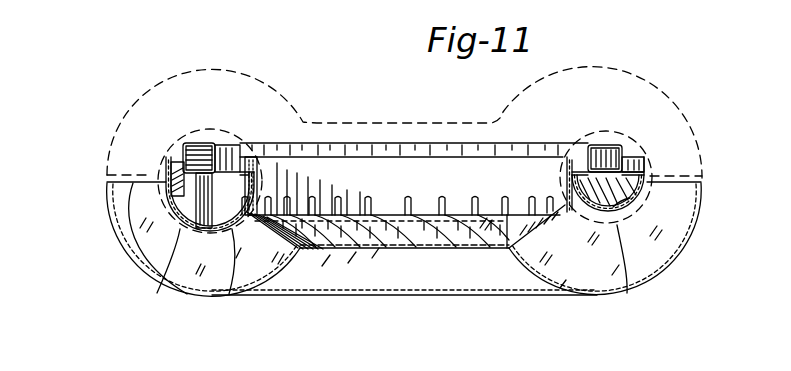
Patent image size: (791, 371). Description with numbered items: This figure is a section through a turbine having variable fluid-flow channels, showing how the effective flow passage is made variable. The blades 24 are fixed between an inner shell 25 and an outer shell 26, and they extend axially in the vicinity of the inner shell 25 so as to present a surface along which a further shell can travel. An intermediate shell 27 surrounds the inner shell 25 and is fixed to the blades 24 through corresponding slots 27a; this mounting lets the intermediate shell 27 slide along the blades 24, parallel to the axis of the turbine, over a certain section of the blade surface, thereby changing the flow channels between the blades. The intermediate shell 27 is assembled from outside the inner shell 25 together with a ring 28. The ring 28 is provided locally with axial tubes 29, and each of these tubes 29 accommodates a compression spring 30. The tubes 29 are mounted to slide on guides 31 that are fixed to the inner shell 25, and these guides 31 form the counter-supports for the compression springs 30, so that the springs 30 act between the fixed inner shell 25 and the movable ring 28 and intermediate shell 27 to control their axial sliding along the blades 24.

The blades 24 is at (200, 258).
The inner shell 25 is at (229, 297).
The outer shell 26 is at (124, 248).
The intermediate shell 27 is at (172, 268).
The slots 27a is at (510, 193).
The ring 28 is at (220, 146).
The axial tubes 29 is at (180, 177).
The compression springs 30 is at (205, 152).
The guides 31 is at (203, 200).